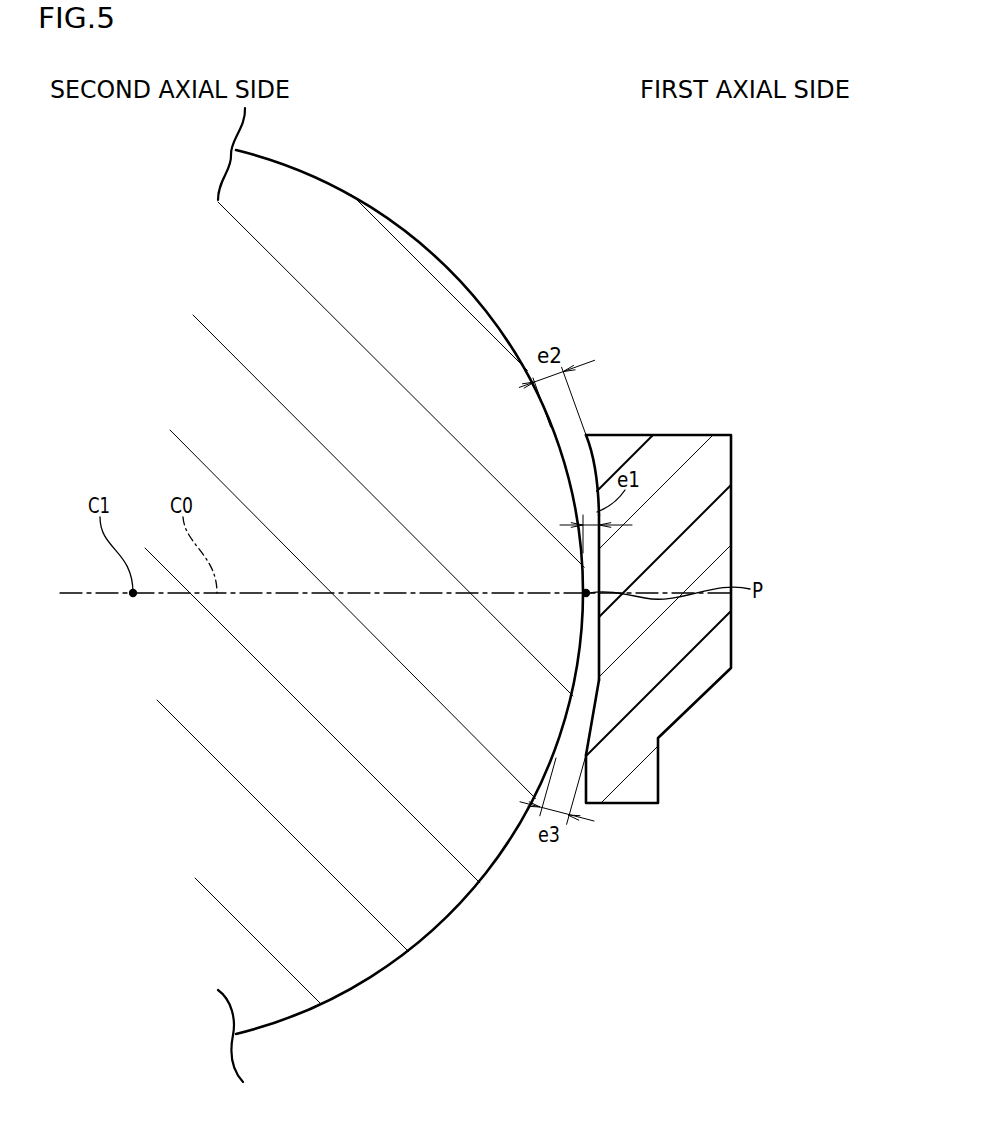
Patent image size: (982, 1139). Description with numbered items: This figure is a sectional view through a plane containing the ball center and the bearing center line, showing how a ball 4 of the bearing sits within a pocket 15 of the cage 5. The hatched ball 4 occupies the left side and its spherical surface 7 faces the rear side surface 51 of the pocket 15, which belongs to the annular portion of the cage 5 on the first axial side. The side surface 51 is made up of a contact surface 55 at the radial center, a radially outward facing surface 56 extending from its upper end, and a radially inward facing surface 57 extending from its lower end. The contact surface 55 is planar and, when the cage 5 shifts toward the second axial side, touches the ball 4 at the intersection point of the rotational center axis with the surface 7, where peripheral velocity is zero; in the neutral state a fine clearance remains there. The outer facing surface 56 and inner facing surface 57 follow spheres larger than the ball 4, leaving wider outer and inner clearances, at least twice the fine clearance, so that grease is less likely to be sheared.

The ball 4 is at (328, 227).
The surface of the ball 7 is at (413, 237).
The cage 5 is at (625, 619).
The side surface 51 is at (515, 595).
The contact surface 55 is at (599, 585).
The radially outward facing surface 56 is at (590, 457).
The radially inward facing surface 57 is at (597, 700).
The pocket 15 is at (581, 712).